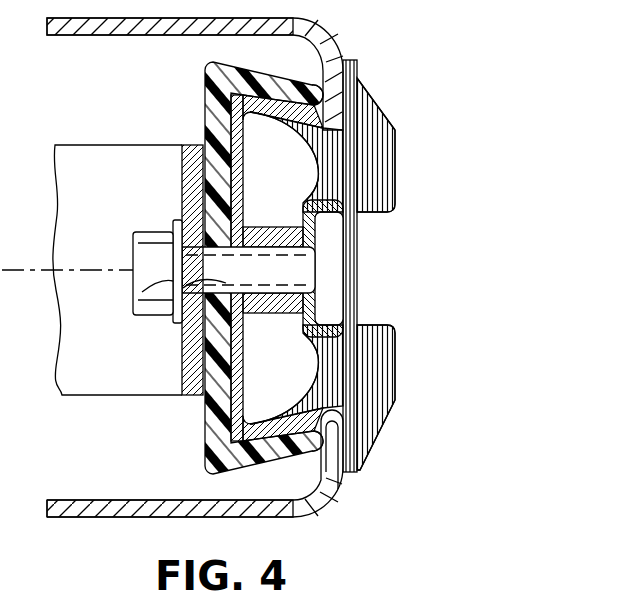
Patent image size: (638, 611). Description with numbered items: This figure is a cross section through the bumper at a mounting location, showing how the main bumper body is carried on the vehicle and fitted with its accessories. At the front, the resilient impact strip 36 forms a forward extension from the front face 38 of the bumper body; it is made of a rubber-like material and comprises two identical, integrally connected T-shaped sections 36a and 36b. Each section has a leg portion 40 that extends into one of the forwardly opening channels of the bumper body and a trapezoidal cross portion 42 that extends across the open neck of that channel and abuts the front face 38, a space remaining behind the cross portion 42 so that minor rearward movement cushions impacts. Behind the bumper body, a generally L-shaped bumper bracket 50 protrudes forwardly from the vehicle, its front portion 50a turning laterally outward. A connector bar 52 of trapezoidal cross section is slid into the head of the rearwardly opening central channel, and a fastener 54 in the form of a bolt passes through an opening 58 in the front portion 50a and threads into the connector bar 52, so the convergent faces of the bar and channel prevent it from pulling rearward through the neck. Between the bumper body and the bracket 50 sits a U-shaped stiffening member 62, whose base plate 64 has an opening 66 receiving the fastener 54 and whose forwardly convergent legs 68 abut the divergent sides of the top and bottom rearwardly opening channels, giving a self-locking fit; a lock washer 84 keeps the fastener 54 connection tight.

The resilient impact strip 36 is at (422, 398).
The impact strip section 36a is at (397, 140).
The impact strip section 36b is at (395, 345).
The front face 38 is at (352, 212).
The leg portion 40 is at (327, 392).
The cross portion 42 is at (380, 375).
The bumper bracket 50 is at (120, 372).
The front portion of bracket 50a is at (180, 398).
The connector bar 52 is at (350, 243).
The fastener 54 is at (292, 263).
The opening 58 is at (183, 228).
The stiffening member 62 is at (205, 473).
The base plate 64 is at (213, 128).
The opening 66 is at (134, 300).
The forwardly convergent legs 68 is at (293, 462).
The lock washer 84 is at (172, 222).